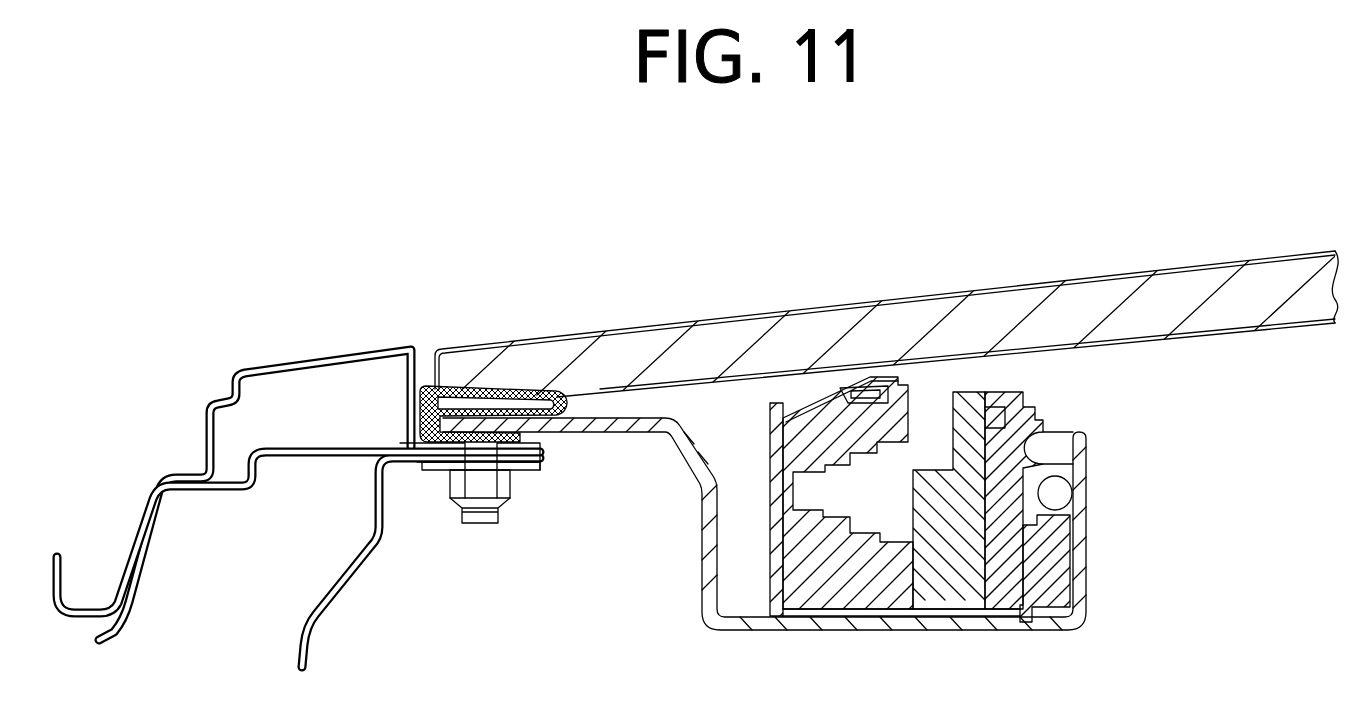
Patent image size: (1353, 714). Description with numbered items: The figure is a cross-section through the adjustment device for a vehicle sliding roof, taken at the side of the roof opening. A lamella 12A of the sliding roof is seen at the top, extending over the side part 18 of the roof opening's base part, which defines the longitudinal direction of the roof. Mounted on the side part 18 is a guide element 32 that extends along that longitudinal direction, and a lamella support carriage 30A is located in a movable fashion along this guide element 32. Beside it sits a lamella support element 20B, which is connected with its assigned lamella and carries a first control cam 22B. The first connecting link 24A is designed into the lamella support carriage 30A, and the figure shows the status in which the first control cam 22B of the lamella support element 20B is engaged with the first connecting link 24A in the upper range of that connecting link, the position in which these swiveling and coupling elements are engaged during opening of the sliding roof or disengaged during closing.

The lamella 12A is at (1177, 288).
The side part 18 is at (707, 594).
The lamella support element 20B is at (942, 580).
The first control cam 22B is at (1000, 404).
The first connecting link 24A is at (1040, 441).
The lamella support carriage 30A is at (1047, 588).
The guide element 32 is at (889, 598).